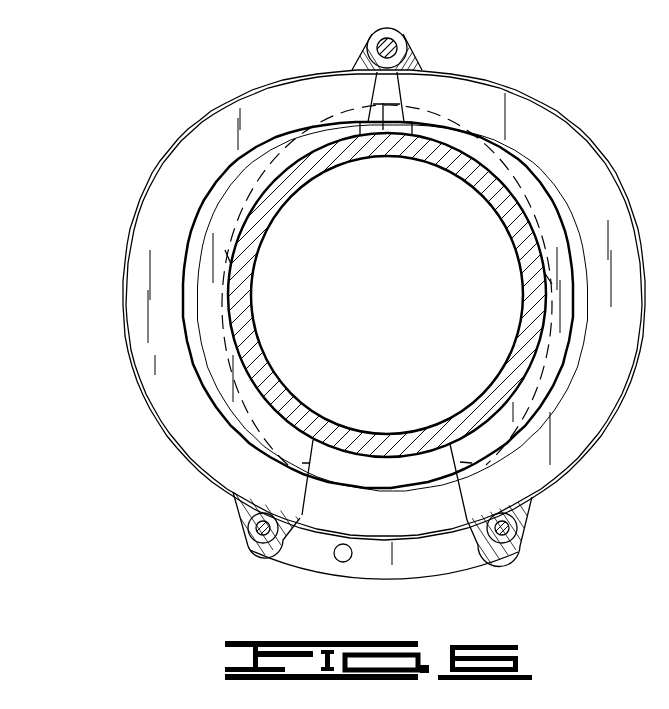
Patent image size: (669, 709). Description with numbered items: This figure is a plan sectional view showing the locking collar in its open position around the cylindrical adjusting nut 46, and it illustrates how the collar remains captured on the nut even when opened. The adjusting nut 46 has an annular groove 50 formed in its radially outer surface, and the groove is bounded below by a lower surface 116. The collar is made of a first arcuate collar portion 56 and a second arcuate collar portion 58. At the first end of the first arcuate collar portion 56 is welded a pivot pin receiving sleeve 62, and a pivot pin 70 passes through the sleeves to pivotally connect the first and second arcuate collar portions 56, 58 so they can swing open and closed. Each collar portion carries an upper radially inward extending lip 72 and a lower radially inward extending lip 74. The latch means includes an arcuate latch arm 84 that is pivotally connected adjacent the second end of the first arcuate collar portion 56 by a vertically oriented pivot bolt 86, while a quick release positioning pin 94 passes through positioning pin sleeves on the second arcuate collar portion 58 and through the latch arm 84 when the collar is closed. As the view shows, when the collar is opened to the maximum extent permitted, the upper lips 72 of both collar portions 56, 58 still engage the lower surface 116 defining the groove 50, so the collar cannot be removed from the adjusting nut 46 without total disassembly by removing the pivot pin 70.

The adjusting nut 46 is at (238, 322).
The annular groove 50 is at (230, 213).
The first arcuate collar portion 56 is at (210, 130).
The second arcuate collar portion 58 is at (394, 305).
The upper pivot pin receiving sleeve 62 is at (407, 52).
The pivot pin 70 is at (390, 46).
The upper radially inward extending lip 72 is at (423, 118).
The lower radially inward extending lip 74 is at (230, 257).
The arcuate latch arm 84 is at (468, 552).
The pivot bolt 86 is at (260, 528).
The quick release positioning pin 94 is at (518, 527).
The lower surface 116 is at (393, 115).